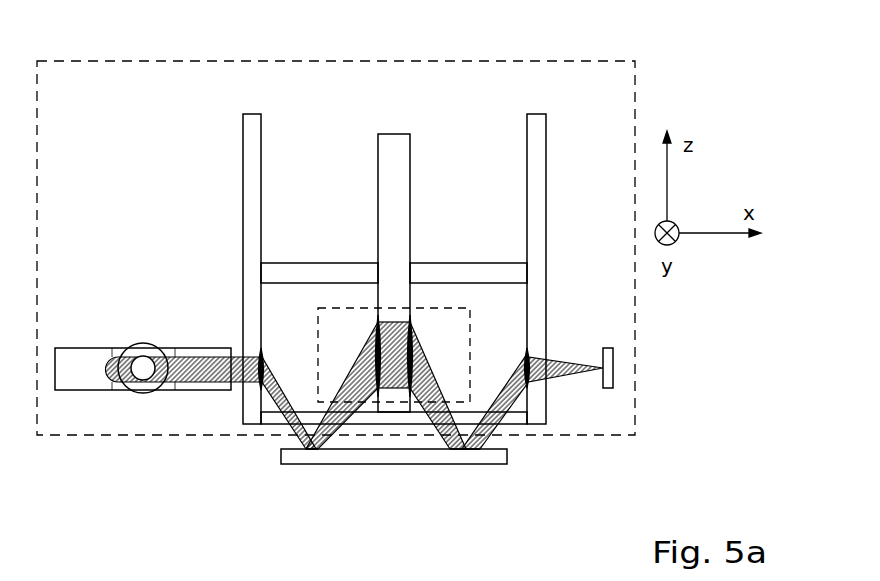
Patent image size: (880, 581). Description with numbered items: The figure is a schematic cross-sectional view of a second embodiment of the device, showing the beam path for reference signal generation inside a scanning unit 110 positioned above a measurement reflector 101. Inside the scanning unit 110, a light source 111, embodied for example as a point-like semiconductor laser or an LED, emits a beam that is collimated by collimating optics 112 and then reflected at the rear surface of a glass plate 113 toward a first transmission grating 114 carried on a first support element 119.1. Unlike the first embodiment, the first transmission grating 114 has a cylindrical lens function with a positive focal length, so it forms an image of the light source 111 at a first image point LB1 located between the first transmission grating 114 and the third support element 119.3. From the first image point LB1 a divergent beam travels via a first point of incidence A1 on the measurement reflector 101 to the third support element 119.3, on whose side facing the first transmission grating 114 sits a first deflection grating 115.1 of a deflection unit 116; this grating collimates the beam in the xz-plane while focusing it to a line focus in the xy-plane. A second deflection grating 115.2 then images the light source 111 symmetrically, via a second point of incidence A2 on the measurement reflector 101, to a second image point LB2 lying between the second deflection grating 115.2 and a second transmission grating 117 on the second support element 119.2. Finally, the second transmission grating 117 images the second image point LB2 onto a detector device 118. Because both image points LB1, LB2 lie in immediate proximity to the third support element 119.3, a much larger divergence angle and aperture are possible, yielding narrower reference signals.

The scanning unit 110 is at (557, 61).
The first support element 119.1 is at (248, 135).
The second support element 119.2 is at (538, 133).
The third support element 119.3 is at (405, 148).
The glass plate 113 is at (70, 357).
The collimating optics 112 is at (140, 343).
The light source 111 is at (142, 380).
The first transmission grating 114 is at (263, 352).
The first deflection grating 115.1 is at (374, 322).
The second deflection grating 115.2 is at (413, 317).
The deflection unit 116 is at (425, 308).
The second transmission grating 117 is at (526, 352).
The detector device 118 is at (608, 347).
The measurement reflector 101 is at (390, 456).
The first image point LB1 is at (283, 407).
The second image point LB2 is at (505, 405).
The first point of incidence A1 is at (320, 450).
The second point of incidence A2 is at (468, 450).